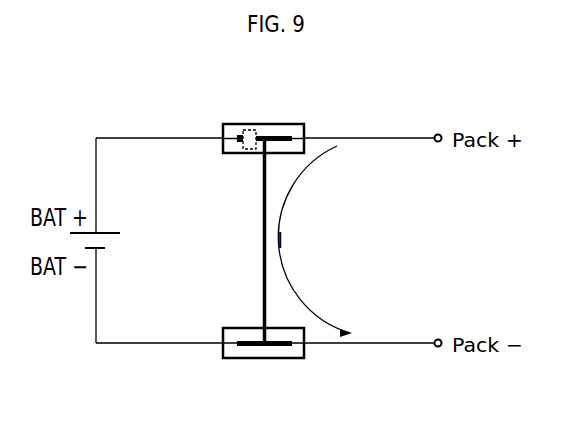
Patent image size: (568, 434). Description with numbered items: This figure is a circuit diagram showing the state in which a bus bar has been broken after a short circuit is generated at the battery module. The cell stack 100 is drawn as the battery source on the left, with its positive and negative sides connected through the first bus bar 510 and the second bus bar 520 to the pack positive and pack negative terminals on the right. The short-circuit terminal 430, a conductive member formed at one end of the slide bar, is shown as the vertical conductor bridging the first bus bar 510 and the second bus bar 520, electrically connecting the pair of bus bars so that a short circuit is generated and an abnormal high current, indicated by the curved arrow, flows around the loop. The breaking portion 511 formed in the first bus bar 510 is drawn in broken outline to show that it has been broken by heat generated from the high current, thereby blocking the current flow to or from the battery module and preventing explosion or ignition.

The cell stack 100 is at (120, 233).
The first bus bar 510 is at (277, 124).
The breaking portion 511 is at (243, 130).
The short-circuit terminal 430 is at (263, 185).
The second bus bar 520 is at (264, 358).